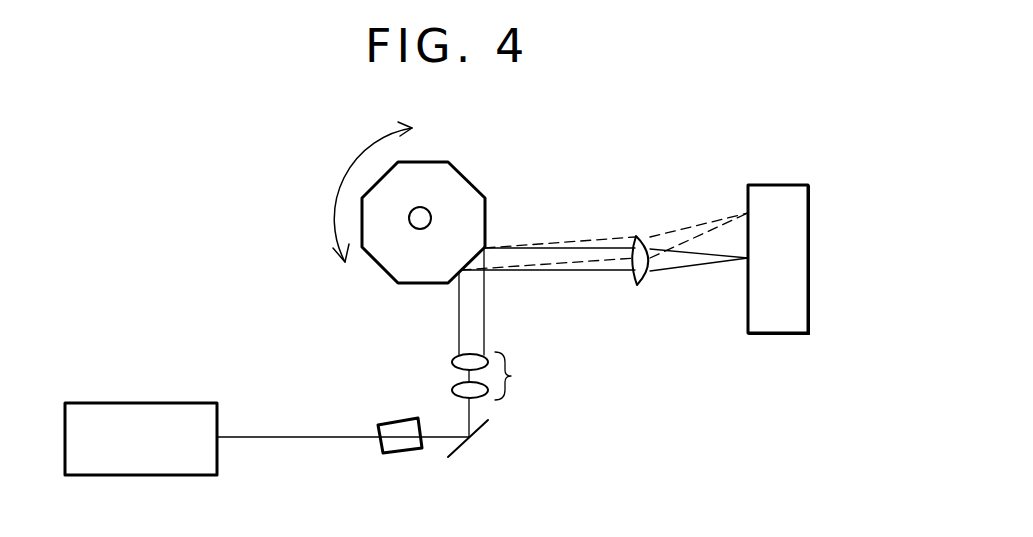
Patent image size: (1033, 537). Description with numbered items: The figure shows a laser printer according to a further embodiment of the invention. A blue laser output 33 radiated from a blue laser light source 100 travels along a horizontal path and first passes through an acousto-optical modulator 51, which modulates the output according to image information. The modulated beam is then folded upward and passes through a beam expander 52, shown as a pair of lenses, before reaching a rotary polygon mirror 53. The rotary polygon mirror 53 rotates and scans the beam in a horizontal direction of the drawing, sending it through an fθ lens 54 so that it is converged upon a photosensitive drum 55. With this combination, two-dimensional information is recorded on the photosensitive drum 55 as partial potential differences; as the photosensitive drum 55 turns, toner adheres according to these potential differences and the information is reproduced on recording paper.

The blue laser light source 100 is at (170, 416).
The blue laser output 33 is at (262, 437).
The acousto-optical (AO) modulator 51 is at (406, 450).
The beam expander 52 is at (511, 377).
The rotary polygon mirror 53 is at (430, 173).
The fθ lens 54 is at (641, 236).
The photosensitive drum 55 is at (748, 328).